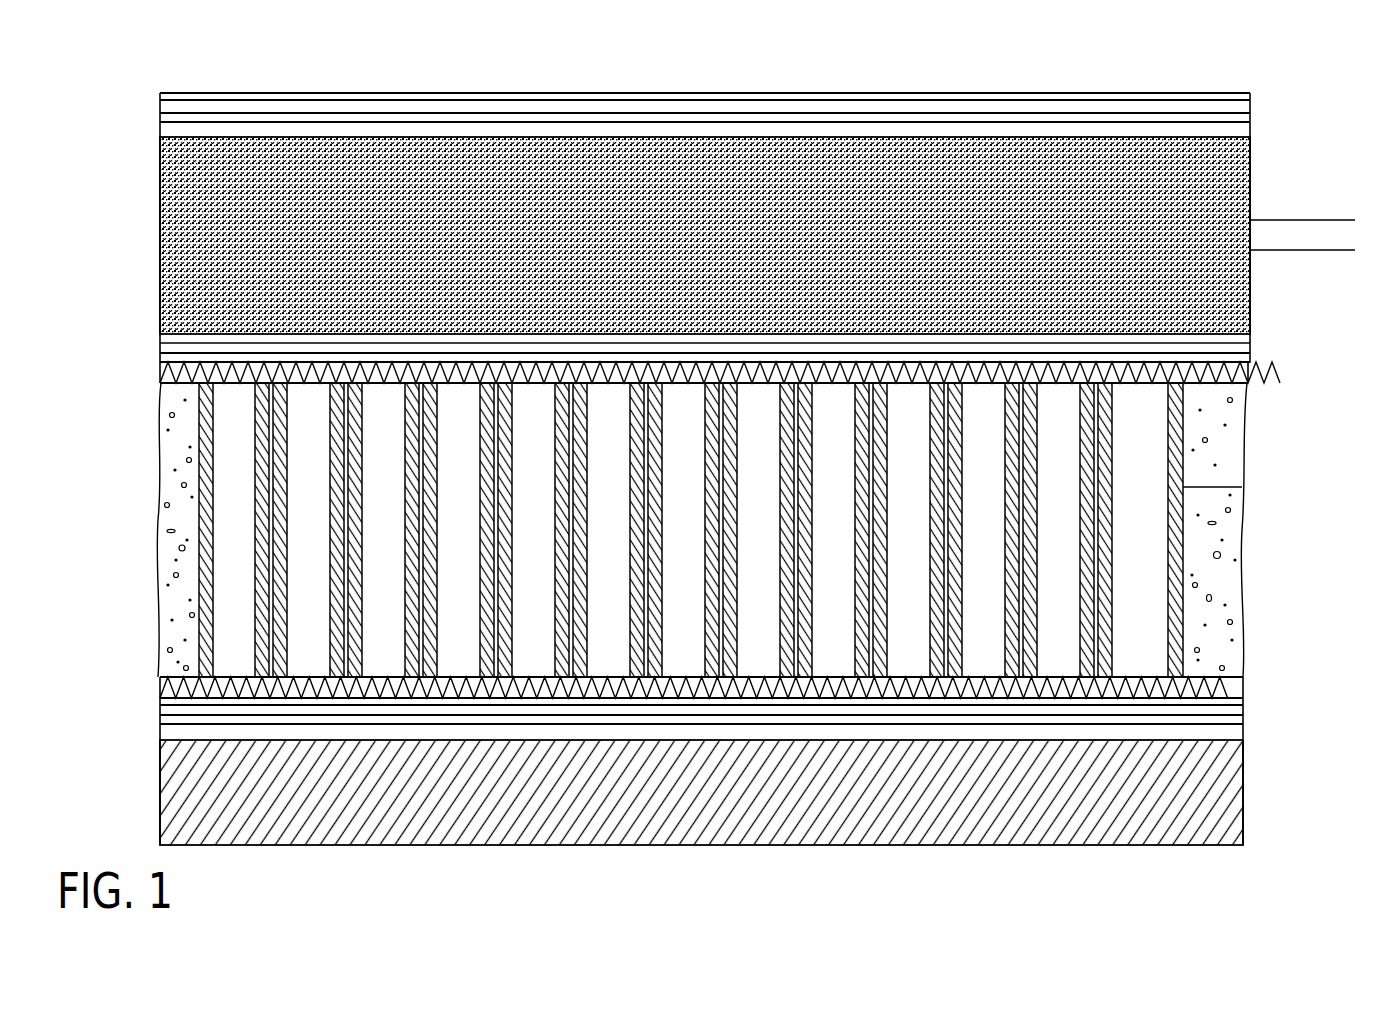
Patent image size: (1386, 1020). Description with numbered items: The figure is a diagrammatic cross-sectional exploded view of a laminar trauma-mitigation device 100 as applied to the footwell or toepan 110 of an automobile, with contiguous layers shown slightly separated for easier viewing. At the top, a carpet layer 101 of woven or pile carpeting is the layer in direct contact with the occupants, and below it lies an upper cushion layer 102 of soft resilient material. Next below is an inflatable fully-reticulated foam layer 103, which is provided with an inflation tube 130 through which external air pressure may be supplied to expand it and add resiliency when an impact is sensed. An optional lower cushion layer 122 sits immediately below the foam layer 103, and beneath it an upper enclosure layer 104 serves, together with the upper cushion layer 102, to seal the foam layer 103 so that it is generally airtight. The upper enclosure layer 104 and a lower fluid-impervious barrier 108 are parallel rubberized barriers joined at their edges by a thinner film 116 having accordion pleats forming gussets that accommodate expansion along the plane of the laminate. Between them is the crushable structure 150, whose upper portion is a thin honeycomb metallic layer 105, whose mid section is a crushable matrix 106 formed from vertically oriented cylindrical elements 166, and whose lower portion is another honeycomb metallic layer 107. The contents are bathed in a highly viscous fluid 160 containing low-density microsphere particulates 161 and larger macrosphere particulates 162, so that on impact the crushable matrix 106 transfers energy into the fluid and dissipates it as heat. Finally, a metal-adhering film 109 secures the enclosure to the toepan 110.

The laminar trauma-mitigation device 100 is at (404, 75).
The carpet layer 101 is at (203, 93).
The upper cushion layer 102 is at (160, 118).
The foam layer 103 is at (160, 195).
The upper enclosure layer 104 is at (1222, 348).
The honeycomb metallic layer 105 is at (168, 372).
The crushable matrix 106 is at (205, 478).
The honeycomb metallic layer 107 is at (162, 690).
The fluid-impervious barrier 108 is at (1243, 705).
The metal-adhering film 109 is at (160, 722).
The toepan 110 is at (172, 795).
The film 116 is at (158, 425).
The lower cushion layer 122 is at (160, 335).
The inflation tube 130 is at (1268, 220).
The crushable structure 150 is at (205, 598).
The highly viscous fluid 160 is at (158, 535).
The microsphere particulates 161 is at (1228, 521).
The macrosphere particulates 162 is at (1212, 598).
The cylindrical elements 166 is at (1228, 486).